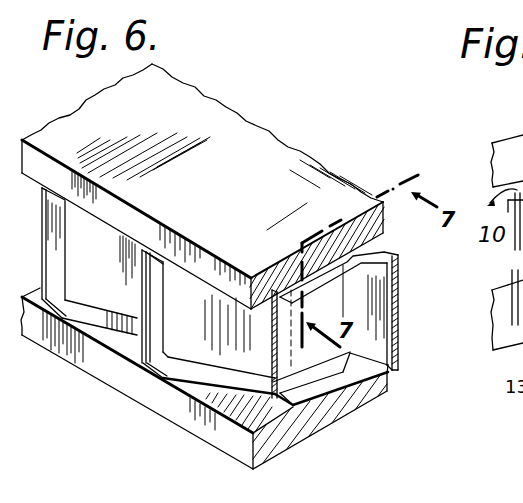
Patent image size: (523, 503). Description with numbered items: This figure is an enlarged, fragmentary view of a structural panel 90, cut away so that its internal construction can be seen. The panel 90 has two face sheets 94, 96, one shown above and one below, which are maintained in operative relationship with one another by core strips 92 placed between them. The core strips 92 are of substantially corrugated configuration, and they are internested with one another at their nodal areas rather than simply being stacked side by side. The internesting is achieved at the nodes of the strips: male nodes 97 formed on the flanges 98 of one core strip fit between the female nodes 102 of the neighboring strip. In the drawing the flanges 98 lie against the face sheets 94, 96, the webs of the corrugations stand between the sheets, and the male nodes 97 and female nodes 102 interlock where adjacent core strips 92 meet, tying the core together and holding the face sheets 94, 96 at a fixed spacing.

The panel 90 is at (143, 415).
The core strips 92 is at (405, 277).
The face sheet 94 is at (243, 140).
The face sheet 96 is at (173, 415).
The male nodes 97 is at (158, 268).
The flanges 98 is at (230, 380).
The female nodes 102 is at (152, 248).